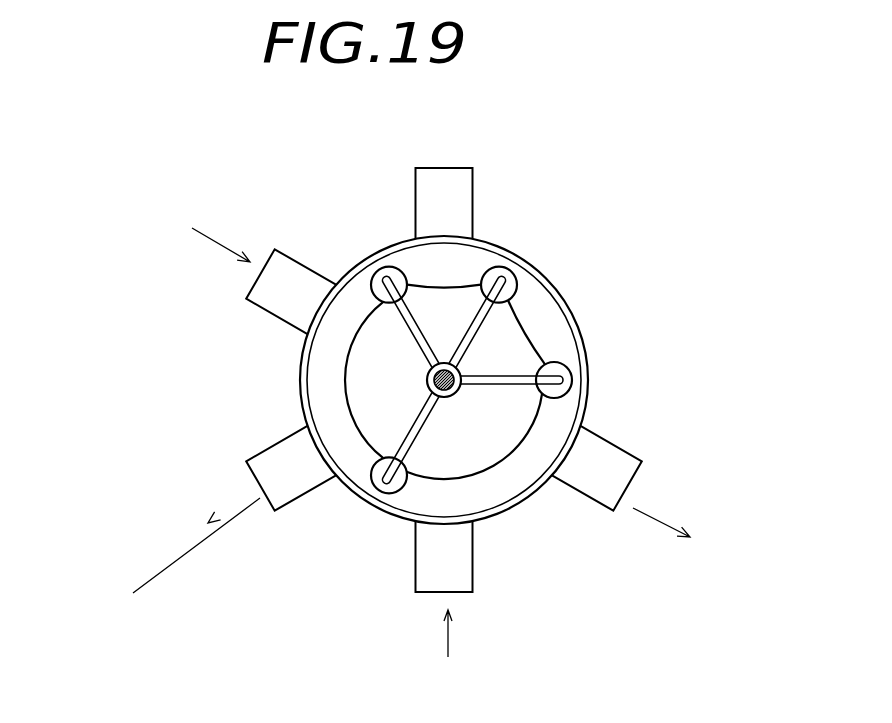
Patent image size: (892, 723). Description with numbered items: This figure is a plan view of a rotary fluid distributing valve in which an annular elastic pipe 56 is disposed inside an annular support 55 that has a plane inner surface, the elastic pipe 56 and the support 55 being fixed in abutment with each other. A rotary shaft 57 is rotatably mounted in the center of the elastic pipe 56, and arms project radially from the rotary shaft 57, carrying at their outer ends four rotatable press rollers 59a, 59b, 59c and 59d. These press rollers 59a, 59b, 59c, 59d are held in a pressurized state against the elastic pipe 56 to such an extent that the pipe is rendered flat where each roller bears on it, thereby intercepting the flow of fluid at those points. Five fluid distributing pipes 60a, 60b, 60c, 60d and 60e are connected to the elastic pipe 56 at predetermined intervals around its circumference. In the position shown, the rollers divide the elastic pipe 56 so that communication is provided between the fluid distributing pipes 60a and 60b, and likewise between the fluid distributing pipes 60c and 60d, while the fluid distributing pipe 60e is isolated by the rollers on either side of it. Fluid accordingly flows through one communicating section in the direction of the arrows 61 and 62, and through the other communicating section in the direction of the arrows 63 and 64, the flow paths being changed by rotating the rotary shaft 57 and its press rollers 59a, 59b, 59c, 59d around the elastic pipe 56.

The annular support 55 is at (583, 343).
The annular elastic pipe 56 is at (545, 307).
The rotary shaft 57 is at (453, 395).
The press roller 59a is at (377, 270).
The press roller 59b is at (380, 485).
The press roller 59c is at (570, 383).
The press roller 59d is at (508, 273).
The fluid distributing pipe 60a is at (267, 283).
The fluid distributing pipe 60b is at (272, 463).
The fluid distributing pipe 60c is at (433, 587).
The fluid distributing pipe 60d is at (623, 482).
The fluid distributing pipe 60e is at (442, 178).
The arrow 61 is at (448, 633).
The arrow 62 is at (650, 520).
The arrow 63 is at (206, 235).
The arrow 64 is at (186, 568).